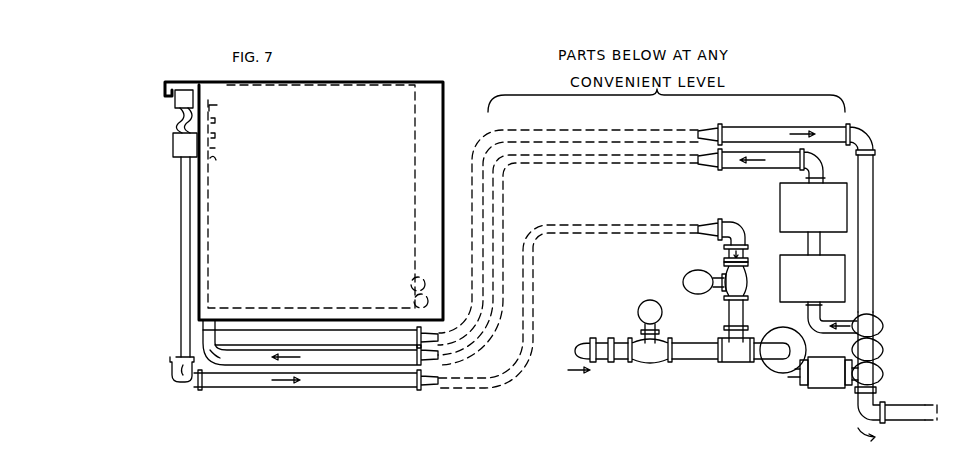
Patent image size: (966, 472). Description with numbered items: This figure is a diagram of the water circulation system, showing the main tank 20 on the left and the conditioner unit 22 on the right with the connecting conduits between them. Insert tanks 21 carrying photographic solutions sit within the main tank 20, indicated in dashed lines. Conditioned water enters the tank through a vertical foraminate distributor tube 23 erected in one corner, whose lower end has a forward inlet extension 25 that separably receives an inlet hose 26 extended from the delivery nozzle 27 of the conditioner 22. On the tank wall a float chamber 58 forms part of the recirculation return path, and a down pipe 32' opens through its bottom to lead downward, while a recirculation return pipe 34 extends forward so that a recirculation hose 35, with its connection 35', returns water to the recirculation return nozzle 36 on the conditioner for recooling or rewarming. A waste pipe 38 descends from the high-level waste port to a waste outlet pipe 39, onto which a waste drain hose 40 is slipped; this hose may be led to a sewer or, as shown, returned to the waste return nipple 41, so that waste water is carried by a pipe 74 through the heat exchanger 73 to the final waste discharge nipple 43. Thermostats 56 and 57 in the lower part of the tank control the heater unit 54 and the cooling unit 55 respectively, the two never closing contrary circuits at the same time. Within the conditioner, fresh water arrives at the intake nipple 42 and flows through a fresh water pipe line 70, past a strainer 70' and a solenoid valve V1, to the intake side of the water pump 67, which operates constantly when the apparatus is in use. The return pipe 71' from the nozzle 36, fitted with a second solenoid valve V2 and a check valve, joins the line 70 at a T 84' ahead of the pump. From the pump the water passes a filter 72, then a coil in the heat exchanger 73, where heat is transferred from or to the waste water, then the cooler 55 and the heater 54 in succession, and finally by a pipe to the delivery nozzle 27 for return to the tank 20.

The main tank 20 is at (383, 80).
The insert tanks 21 is at (428, 108).
The vertical foraminate distributor tube 23 is at (224, 152).
The waste pipe 38 is at (177, 129).
The float chamber 58 is at (181, 146).
The down pipe 32' is at (167, 357).
The waste outlet pipe 39 is at (302, 340).
The forward inlet extension 25 is at (313, 365).
The recirculation return pipe 34 is at (382, 386).
The heater thermostat 56 is at (410, 280).
The cooler thermostat 57 is at (413, 300).
The waste drain hose 40 is at (468, 278).
The inlet hose 26 is at (632, 166).
The recirculation hose 35 is at (568, 297).
The conduit 35' is at (461, 398).
The waste return nipple 41 is at (718, 130).
The waste pipe 74 is at (872, 205).
The delivery nozzle 27 is at (718, 168).
The heater unit 54 is at (780, 236).
The cooling unit 55 is at (780, 297).
The recirculation return nozzle 36 is at (722, 224).
The check valve 71' is at (749, 241).
The solenoid valve V2 is at (715, 302).
The intake nipple 42 is at (583, 344).
The strainer 70' is at (614, 367).
The solenoid valve V1 is at (650, 331).
The fresh water pipe line 70 is at (713, 367).
The pipe 84' is at (759, 371).
The water pump 67 is at (786, 372).
The filter 72 is at (838, 389).
The heat exchanger 73 is at (878, 318).
The final waste discharge nipple 43 is at (896, 406).
The conditioner unit 22 is at (648, 277).